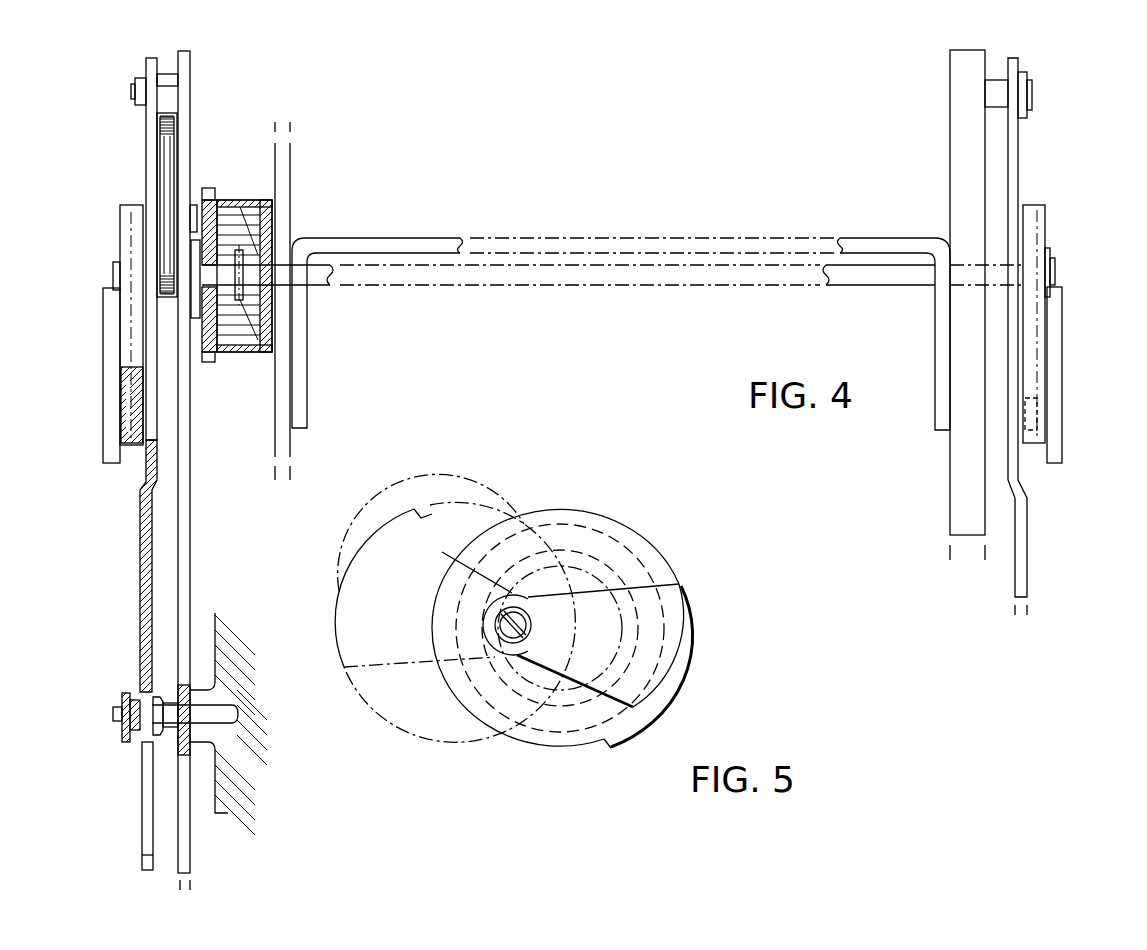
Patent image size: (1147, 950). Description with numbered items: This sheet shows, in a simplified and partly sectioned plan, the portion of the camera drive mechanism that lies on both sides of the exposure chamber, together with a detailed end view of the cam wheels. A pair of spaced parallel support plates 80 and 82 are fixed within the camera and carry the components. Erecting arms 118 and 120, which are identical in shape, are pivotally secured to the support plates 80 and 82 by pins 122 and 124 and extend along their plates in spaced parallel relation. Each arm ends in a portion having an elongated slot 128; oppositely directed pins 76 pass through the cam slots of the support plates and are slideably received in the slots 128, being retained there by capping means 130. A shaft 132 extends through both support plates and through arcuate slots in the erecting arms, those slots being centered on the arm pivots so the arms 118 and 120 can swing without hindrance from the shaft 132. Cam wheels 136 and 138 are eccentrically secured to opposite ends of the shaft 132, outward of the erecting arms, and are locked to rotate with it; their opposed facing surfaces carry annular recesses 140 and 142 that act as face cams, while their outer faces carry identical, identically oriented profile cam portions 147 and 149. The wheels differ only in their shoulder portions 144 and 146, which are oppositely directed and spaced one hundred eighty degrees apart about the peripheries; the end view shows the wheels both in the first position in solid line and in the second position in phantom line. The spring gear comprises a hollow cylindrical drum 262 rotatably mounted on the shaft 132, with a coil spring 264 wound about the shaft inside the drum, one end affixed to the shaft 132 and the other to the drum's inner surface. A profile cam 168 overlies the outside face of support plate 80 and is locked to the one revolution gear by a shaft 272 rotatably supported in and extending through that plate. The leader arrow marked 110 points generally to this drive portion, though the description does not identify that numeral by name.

In FIG. 4, the pin 76 is at (113, 712).
In FIG. 4, the support plate 80 is at (190, 526).
In FIG. 4, the support plate 82 is at (955, 478).
In FIG. 4, the drive assembly 110 is at (224, 155).
In FIG. 4, the erecting arm 118 is at (146, 548).
In FIG. 4, the erecting arm 120 is at (1022, 512).
In FIG. 4, the pin 122 is at (135, 90).
In FIG. 4, the pin 124 is at (1032, 92).
In FIG. 4, the elongated slot 128 is at (143, 770).
In FIG. 4, the capping means 130 is at (128, 694).
In FIG. 4, the shaft 132 is at (113, 277).
In FIG. 5, the shaft 132 is at (533, 625).
In FIG. 4, the cam wheel 136 is at (120, 238).
In FIG. 5, the cam wheel 136 is at (522, 742).
In FIG. 4, the cam wheel 138 is at (1047, 232).
In FIG. 4, the annular recess 140 is at (140, 445).
In FIG. 5, the annular recess 140 is at (455, 694).
In FIG. 4, the annular recess 142 is at (1040, 406).
In FIG. 5, the shoulder portion 144 is at (432, 508).
In FIG. 5, the shoulder portion 146 is at (507, 678).
In FIG. 4, the profile cam portion 147 is at (103, 345).
In FIG. 5, the profile cam portion 147 is at (342, 600).
In FIG. 4, the profile cam portion 149 is at (1062, 335).
In FIG. 4, the profile cam 168 is at (165, 160).
In FIG. 4, the hollow cylindrical drum 262 is at (248, 197).
In FIG. 4, the coil spring 264 is at (268, 214).
In FIG. 4, the shaft 272 is at (190, 207).